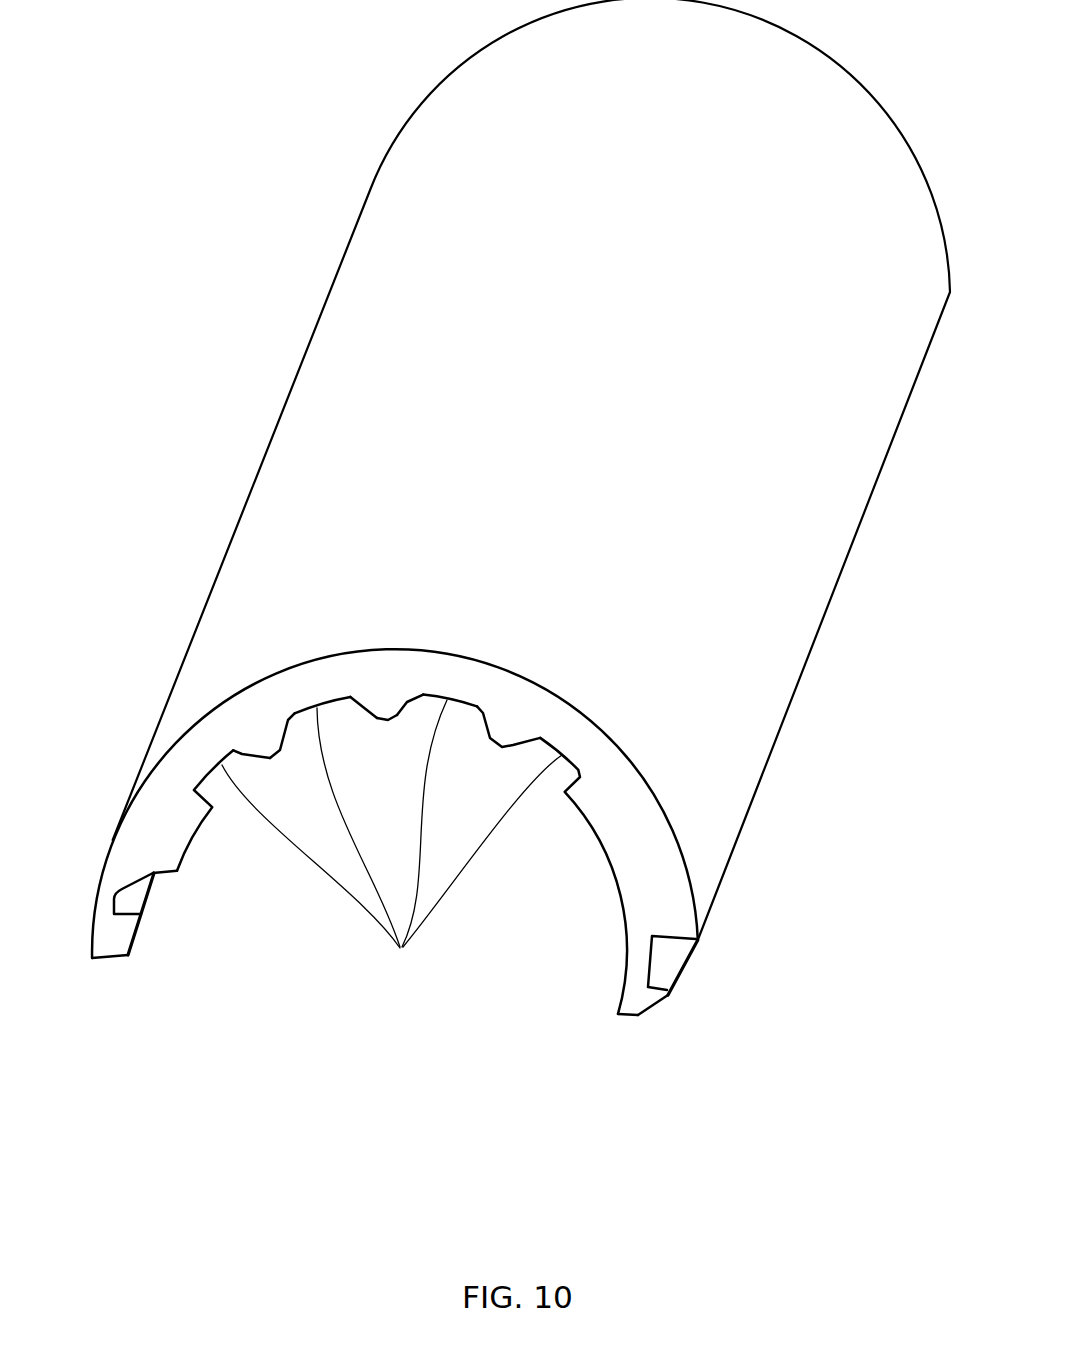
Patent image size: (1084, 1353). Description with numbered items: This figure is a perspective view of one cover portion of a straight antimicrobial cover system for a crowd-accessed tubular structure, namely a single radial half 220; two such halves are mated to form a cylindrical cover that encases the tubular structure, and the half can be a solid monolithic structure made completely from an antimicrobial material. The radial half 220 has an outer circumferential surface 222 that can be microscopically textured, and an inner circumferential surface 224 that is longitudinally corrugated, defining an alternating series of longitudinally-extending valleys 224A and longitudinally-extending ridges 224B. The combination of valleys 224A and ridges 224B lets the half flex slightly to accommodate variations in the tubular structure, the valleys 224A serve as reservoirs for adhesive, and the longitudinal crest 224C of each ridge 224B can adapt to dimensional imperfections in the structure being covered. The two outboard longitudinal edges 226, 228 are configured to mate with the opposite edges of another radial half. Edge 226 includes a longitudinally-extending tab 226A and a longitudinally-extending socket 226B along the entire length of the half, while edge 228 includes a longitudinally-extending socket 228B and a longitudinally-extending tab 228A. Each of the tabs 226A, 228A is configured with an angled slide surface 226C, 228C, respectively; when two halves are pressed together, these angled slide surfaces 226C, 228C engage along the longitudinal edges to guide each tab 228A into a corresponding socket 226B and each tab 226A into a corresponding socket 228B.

The radial half 220 is at (173, 389).
The outer circumferential surface 222 is at (765, 542).
The inner circumferential surface 224 is at (198, 841).
The longitudinally-extending valleys 224A is at (392, 841).
The longitudinally-extending ridges 224B is at (394, 708).
The longitudinal crest 224C is at (387, 712).
The outboard longitudinal edge 226 is at (93, 960).
The longitudinally-extending tab 226A is at (107, 948).
The longitudinally-extending socket 226B is at (128, 898).
The angled slide surface 226C is at (127, 958).
The outboard longitudinal edge 228 is at (625, 1017).
The longitudinally-extending tab 228A is at (648, 997).
The longitudinally-extending socket 228B is at (663, 956).
The angled slide surface 228C is at (649, 1008).